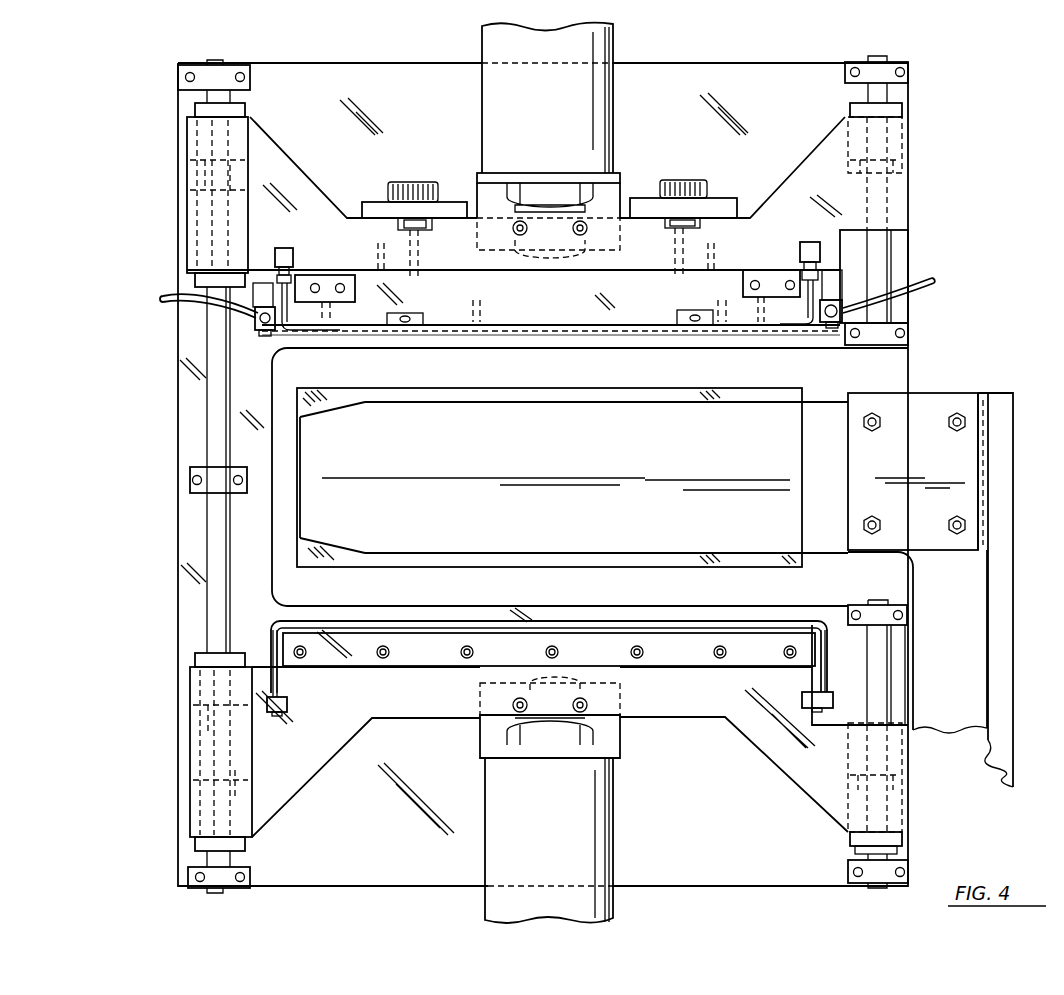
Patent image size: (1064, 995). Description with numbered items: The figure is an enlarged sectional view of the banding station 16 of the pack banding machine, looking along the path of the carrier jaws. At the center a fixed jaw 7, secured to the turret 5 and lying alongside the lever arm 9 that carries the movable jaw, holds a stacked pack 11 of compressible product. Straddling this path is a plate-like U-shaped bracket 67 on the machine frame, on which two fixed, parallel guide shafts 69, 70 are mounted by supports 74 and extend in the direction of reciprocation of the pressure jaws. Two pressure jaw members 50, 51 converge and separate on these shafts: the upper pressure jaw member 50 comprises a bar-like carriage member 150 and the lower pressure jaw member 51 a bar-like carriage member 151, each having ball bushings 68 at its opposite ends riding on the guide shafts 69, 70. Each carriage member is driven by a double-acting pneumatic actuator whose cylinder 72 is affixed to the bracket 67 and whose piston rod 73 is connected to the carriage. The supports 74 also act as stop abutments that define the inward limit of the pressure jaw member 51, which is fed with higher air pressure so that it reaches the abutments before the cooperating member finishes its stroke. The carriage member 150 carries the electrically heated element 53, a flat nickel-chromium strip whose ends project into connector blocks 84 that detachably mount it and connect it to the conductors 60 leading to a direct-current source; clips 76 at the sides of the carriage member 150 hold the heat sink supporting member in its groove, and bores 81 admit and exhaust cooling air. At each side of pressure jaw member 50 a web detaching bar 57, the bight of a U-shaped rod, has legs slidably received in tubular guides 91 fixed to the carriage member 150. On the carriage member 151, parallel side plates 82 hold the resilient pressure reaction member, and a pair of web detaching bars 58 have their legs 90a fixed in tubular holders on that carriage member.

The turret 5 is at (1013, 601).
The fixed jaw 7 is at (739, 459).
The lever arm 9 is at (913, 571).
The pack 11 is at (800, 390).
The banding station 16 is at (282, 378).
The pressure jaw member 50 is at (704, 304).
The pressure jaw member 51 is at (681, 640).
The electrically heated element 53 is at (732, 334).
The web detaching bar 57 is at (619, 328).
The web detaching bar 58 is at (420, 622).
The conductor 60 is at (172, 305).
The U-shaped bracket 67 is at (193, 570).
The ball bushing 68 is at (196, 215).
The guide shaft 69 is at (207, 513).
The guide shaft 70 is at (893, 252).
The cylinder 72 is at (613, 48).
The piston rod 73 is at (526, 241).
The support 74 is at (910, 328).
The clip 76 is at (405, 327).
The bore 81 is at (378, 256).
The side plate 82 is at (338, 667).
The connector block 84 is at (262, 290).
The leg 90a is at (290, 700).
The tubular guide 91 is at (292, 262).
The carriage member 150 is at (778, 190).
The carriage member 151 is at (766, 752).